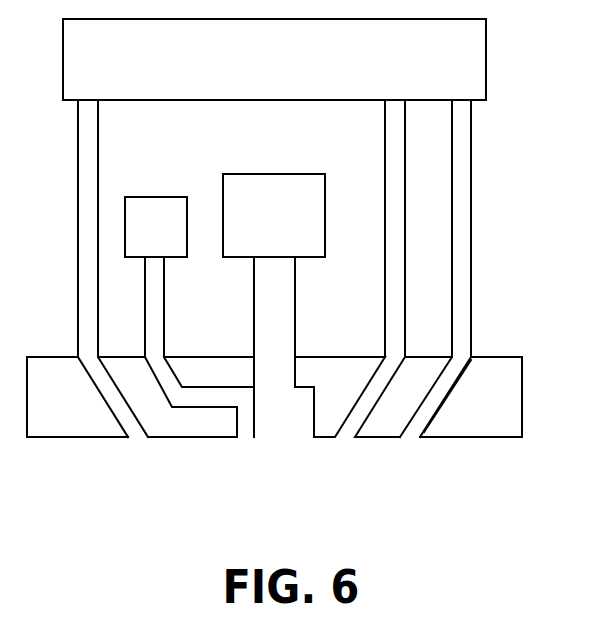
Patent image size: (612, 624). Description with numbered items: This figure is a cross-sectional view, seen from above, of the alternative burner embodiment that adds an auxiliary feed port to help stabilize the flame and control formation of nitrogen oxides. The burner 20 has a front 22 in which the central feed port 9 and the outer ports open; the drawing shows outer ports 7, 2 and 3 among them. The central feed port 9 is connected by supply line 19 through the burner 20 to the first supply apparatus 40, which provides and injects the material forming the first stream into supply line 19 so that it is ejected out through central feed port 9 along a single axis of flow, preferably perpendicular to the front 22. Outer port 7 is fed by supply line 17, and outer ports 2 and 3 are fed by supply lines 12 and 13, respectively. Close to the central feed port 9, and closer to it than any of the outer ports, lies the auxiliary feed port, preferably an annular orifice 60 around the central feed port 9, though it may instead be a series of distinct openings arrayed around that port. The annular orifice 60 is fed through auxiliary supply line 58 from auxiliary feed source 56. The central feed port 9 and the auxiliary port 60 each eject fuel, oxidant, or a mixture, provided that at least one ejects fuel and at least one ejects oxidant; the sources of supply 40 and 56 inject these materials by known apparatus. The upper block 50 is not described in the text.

The manifold / supply block 50 is at (266, 68).
The first supply apparatus 40 is at (258, 222).
The auxiliary feed source 56 is at (143, 237).
The auxiliary supply line 58 is at (166, 287).
The supply line 19 is at (297, 286).
The central feed port 9 is at (283, 437).
The supply line 17 is at (107, 404).
The outer port 7 is at (135, 437).
The annular orifice 60 is at (242, 437).
The supply line 12 is at (365, 386).
The outer port 2 is at (343, 437).
The outer port 3 is at (410, 437).
The burner 20 is at (523, 373).
The supply line 13 is at (442, 403).
The front 22 is at (475, 437).